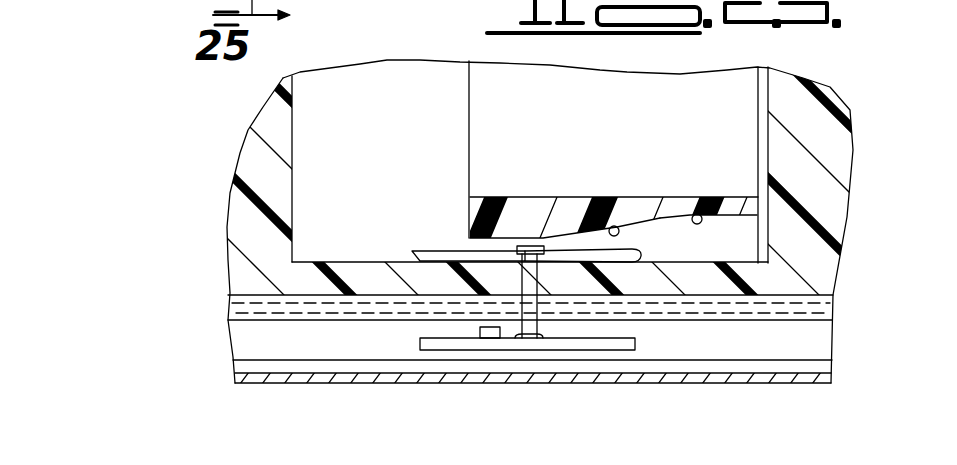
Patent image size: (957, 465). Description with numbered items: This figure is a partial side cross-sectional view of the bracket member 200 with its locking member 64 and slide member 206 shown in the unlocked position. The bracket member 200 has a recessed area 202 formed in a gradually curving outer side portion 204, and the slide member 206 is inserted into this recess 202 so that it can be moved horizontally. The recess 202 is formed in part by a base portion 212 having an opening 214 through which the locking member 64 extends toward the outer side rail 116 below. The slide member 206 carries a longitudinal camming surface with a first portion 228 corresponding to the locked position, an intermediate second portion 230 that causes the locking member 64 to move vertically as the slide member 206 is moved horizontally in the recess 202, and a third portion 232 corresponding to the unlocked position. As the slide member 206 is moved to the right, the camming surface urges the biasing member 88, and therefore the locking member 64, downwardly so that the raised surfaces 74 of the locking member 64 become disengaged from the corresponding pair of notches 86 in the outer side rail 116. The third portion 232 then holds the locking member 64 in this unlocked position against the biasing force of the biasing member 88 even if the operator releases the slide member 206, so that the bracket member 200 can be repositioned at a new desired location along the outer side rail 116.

The bracket member 200 is at (134, 264).
The recessed area 202 is at (327, 147).
The outer side portion 204 is at (240, 213).
The slide member 206 is at (460, 128).
The base portion 212 is at (717, 288).
The opening 214 is at (478, 256).
The first portion 228 is at (694, 216).
The second portion 230 is at (617, 226).
The third portion 232 is at (486, 240).
The biasing member 88 is at (650, 248).
The notches 86 is at (152, 0).
The locking member 64 is at (433, 356).
The raised surfaces 74 is at (491, 345).
The outer side rail 116 is at (228, 370).